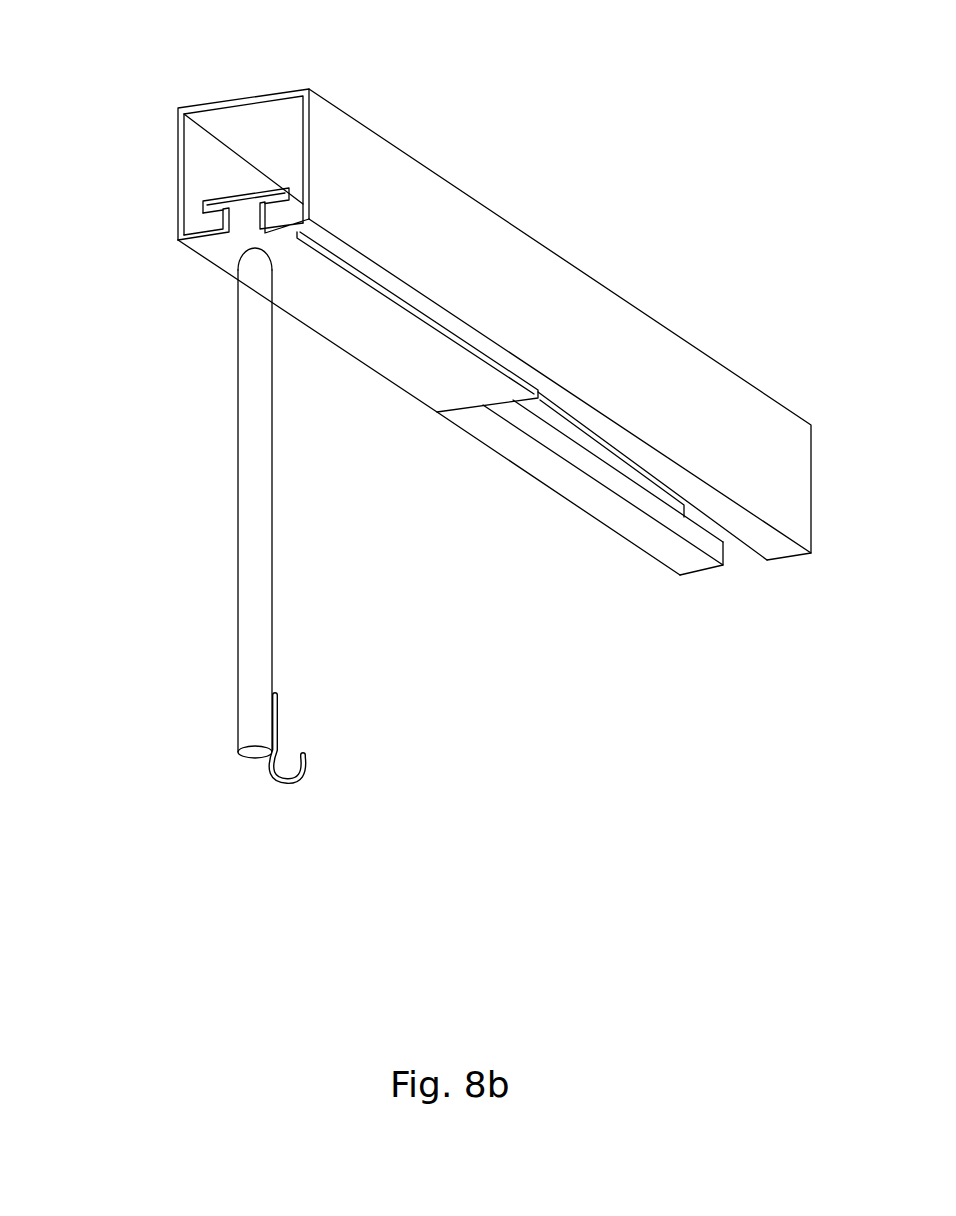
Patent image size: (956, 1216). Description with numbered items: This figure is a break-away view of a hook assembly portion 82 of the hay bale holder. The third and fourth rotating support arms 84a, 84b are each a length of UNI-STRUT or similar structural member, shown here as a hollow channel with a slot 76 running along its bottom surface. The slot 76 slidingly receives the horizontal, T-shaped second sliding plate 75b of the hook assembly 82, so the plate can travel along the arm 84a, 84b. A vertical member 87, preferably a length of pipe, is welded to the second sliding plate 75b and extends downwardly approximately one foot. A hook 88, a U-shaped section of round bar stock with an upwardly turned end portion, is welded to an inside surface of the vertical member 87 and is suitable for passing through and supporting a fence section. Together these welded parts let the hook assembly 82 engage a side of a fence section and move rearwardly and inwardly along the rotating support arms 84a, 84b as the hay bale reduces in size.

The third rotating support arm 84a is at (494, 290).
The fourth rotating support arm 84b is at (400, 147).
The second sliding plate 75b is at (453, 360).
The slot 76 is at (210, 222).
The hook assembly portion 82 is at (237, 415).
The vertical member 87 is at (255, 498).
The hook 88 is at (278, 778).